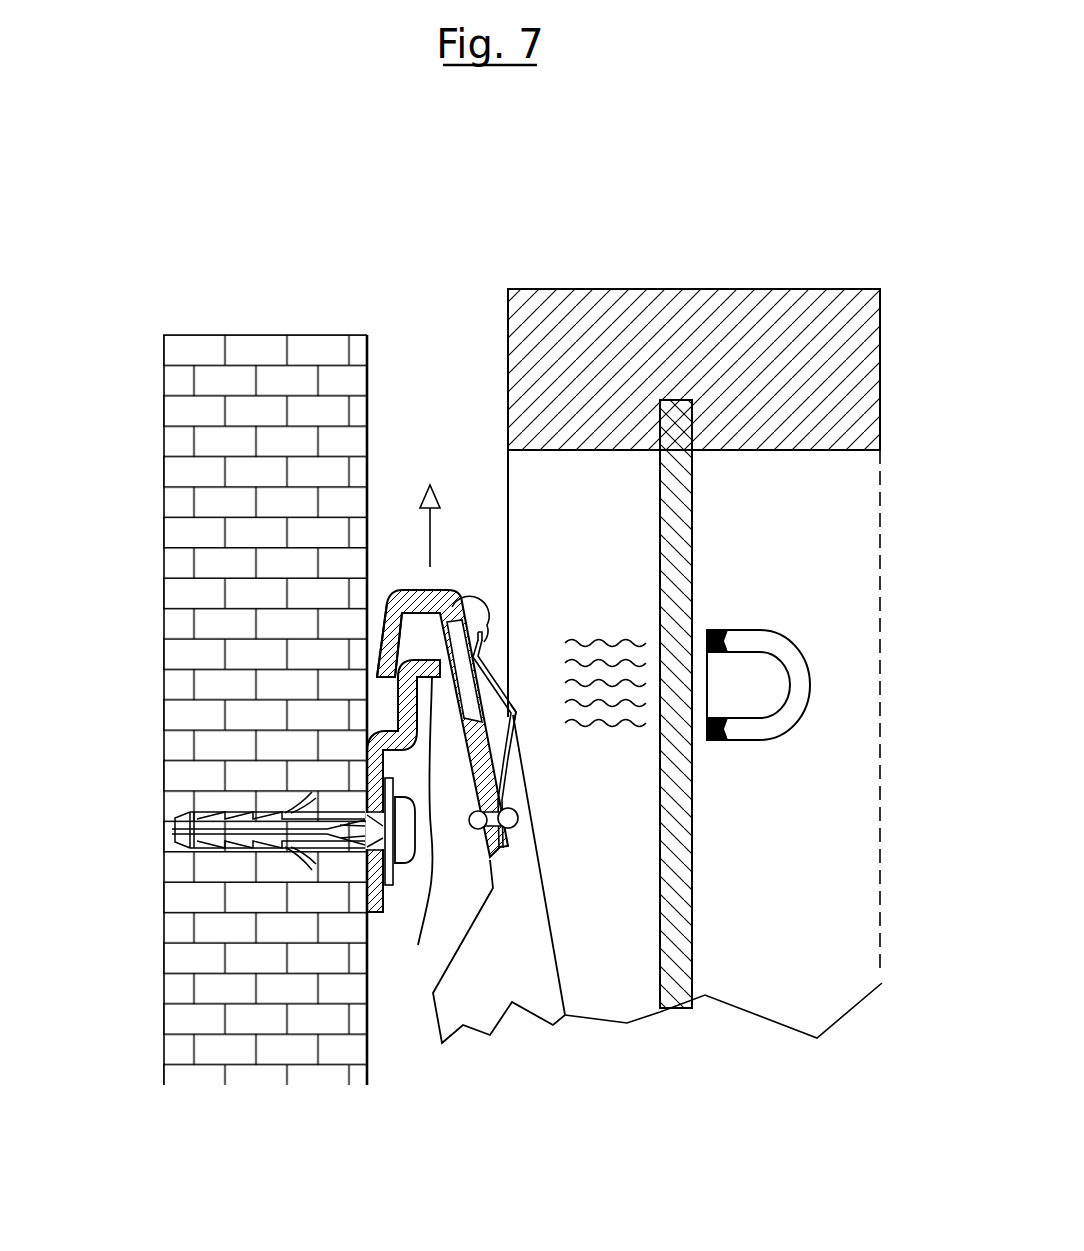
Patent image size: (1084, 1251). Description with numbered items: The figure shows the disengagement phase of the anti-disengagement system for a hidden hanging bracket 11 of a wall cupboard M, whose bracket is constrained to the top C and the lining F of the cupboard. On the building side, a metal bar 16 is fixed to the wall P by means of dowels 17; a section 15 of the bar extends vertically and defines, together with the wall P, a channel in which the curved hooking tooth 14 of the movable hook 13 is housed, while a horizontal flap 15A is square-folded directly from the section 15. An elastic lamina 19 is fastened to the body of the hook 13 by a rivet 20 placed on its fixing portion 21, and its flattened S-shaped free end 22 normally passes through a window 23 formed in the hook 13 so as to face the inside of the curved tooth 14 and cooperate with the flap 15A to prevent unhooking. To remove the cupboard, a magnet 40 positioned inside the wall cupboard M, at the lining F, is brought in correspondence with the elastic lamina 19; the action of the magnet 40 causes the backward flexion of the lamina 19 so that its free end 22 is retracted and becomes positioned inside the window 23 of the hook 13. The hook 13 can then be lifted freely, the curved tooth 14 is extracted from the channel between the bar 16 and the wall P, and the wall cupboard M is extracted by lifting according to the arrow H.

The hanging bracket 11 is at (414, 441).
The hook 13 is at (477, 975).
The curved hooking tooth 14 is at (378, 679).
The section 15 is at (403, 700).
The horizontal flap 15A is at (400, 835).
The metal bar 16 is at (389, 931).
The dowels 17 is at (205, 833).
The elastic lamina 19 is at (515, 722).
The rivet 20 is at (515, 815).
The fixing portion 21 is at (510, 757).
The free end 22 is at (486, 657).
The window 23 is at (462, 636).
The magnet 40 is at (763, 643).
The wall P is at (272, 385).
The wall cupboard M is at (733, 254).
The top C is at (795, 302).
The lining F is at (688, 512).
The arrow H is at (420, 526).